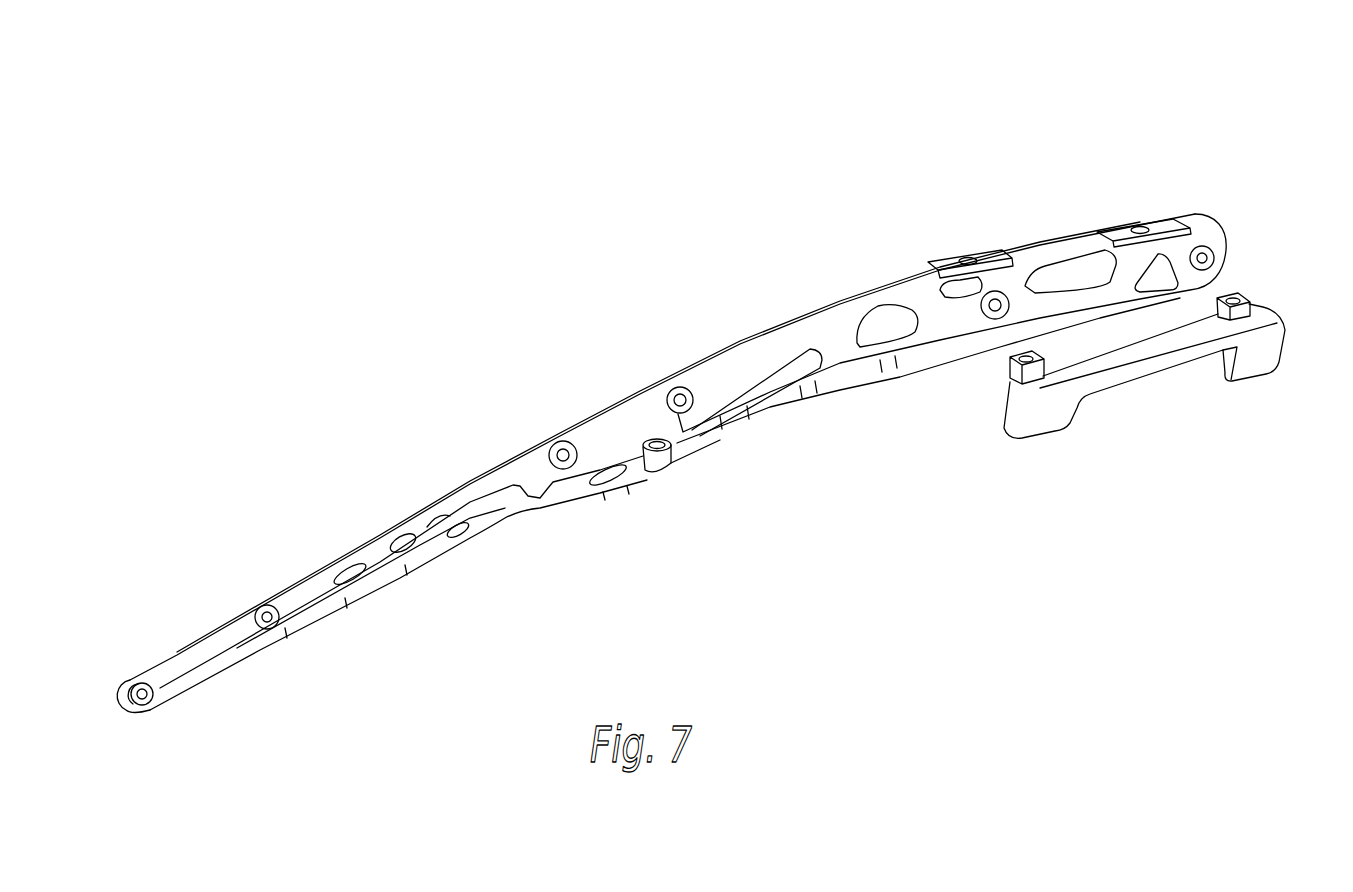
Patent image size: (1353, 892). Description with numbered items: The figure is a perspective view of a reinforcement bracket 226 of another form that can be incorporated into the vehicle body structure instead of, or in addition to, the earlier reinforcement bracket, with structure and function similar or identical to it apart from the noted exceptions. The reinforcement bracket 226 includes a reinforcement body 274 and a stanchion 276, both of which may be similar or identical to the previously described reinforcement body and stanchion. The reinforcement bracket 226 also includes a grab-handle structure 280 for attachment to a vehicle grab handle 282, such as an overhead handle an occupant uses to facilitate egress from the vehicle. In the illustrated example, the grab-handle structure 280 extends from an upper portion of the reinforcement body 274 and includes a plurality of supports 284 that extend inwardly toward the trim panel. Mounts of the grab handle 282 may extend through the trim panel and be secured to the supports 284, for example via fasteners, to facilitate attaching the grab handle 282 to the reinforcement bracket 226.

The grab-handle structure 280 is at (985, 190).
The reinforcement body 274 is at (683, 362).
The reinforcement bracket 226 is at (907, 392).
The stanchion 276 is at (673, 468).
The vehicle grab handle 282 is at (1160, 376).
The supports 284 is at (965, 257).